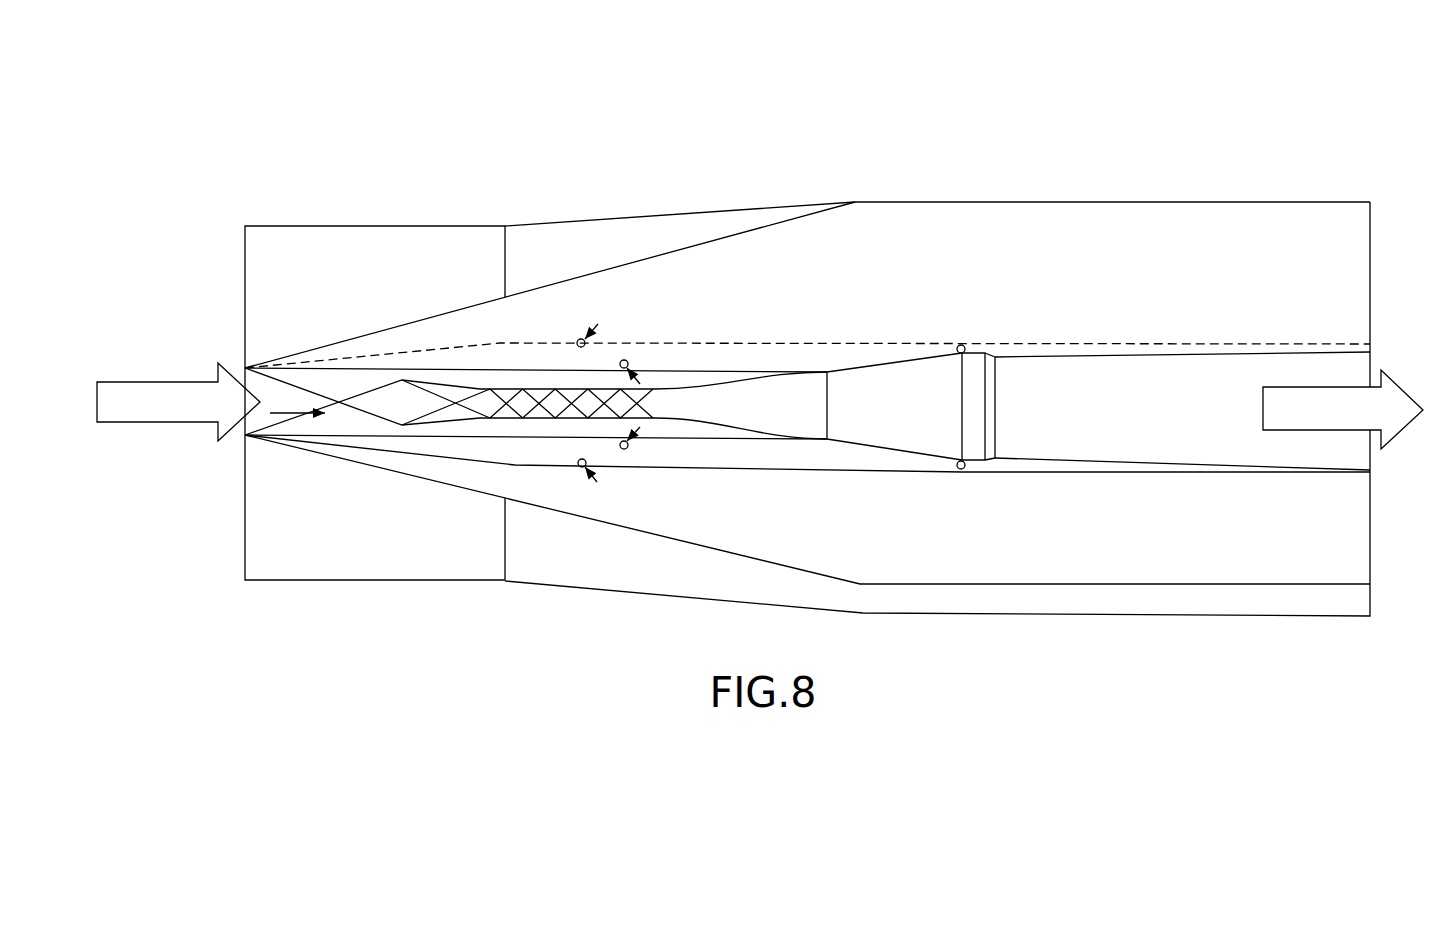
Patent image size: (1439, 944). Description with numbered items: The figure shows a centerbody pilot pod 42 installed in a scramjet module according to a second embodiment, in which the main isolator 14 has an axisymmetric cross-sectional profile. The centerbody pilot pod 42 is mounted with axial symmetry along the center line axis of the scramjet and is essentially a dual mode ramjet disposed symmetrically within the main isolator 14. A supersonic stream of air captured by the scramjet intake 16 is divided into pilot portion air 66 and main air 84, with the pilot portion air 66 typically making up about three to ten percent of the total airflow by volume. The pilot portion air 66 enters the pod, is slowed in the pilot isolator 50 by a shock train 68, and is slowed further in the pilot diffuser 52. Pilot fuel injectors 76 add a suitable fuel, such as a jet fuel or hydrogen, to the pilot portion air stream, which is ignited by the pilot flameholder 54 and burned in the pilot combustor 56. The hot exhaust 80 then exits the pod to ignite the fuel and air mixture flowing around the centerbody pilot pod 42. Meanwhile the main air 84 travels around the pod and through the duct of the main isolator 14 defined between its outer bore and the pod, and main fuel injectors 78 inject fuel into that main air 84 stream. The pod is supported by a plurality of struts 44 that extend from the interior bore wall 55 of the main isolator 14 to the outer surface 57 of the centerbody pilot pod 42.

The main isolator 14 is at (956, 157).
The scramjet intake 16 is at (167, 417).
The centerbody pilot pod 42 is at (1054, 459).
The struts 44 is at (767, 280).
The pilot isolator 50 is at (515, 376).
The pilot diffuser 52 is at (846, 420).
The pilot flameholder 54 is at (963, 345).
The interior bore wall 55 is at (1189, 203).
The pilot combustor 56 is at (1071, 423).
The outer surface 57 is at (1011, 476).
The pilot portion air 66 is at (291, 413).
The shock train 68 is at (390, 418).
The pilot fuel injectors 76 is at (952, 470).
The main fuel injectors 78 is at (582, 468).
The hot exhaust 80 is at (1331, 425).
The main air 84 is at (412, 518).